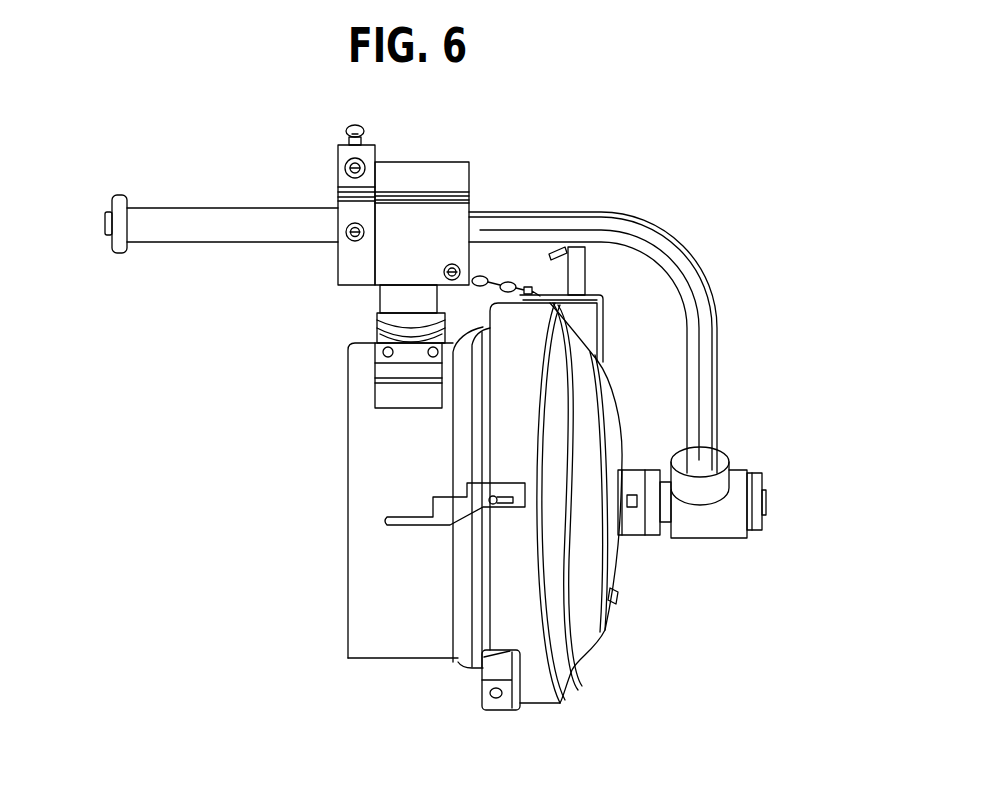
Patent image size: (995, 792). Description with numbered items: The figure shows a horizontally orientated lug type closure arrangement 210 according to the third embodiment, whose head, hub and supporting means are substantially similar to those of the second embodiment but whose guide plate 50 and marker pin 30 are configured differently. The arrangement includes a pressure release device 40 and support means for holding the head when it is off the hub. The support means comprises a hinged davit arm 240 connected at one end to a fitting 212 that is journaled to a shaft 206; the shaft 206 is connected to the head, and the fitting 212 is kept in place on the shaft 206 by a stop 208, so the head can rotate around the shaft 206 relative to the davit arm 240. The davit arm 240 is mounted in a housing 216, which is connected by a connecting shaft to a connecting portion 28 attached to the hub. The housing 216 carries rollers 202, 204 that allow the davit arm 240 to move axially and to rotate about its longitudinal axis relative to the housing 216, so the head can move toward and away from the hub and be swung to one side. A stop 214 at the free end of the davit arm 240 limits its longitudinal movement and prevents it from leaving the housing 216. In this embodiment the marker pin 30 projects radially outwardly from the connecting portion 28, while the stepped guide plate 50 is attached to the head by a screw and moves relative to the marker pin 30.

The closure arrangement 210 is at (296, 141).
The housing 216 is at (420, 155).
The roller 202 is at (329, 281).
The stop 214 is at (114, 264).
The roller 204 is at (477, 266).
The pressure release device 40 is at (592, 281).
The hinged davit arm 240 is at (681, 259).
The marker pin 30 is at (377, 361).
The connecting portion 28 is at (401, 403).
The guide plate 50 is at (446, 511).
The shaft 206 is at (655, 538).
The fitting 212 is at (727, 519).
The stop 208 is at (764, 482).